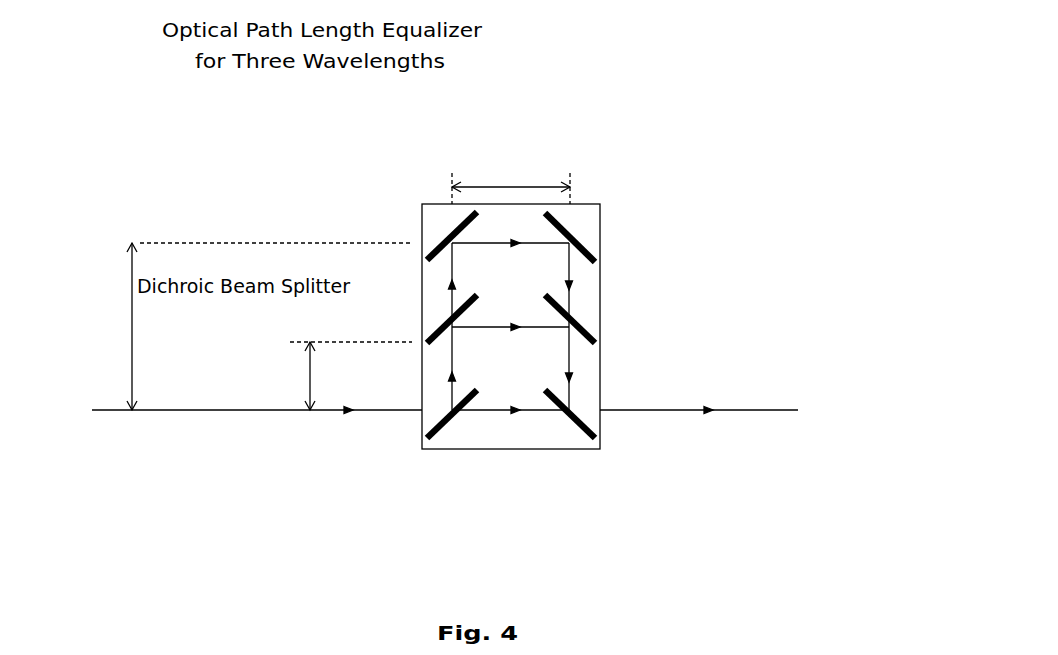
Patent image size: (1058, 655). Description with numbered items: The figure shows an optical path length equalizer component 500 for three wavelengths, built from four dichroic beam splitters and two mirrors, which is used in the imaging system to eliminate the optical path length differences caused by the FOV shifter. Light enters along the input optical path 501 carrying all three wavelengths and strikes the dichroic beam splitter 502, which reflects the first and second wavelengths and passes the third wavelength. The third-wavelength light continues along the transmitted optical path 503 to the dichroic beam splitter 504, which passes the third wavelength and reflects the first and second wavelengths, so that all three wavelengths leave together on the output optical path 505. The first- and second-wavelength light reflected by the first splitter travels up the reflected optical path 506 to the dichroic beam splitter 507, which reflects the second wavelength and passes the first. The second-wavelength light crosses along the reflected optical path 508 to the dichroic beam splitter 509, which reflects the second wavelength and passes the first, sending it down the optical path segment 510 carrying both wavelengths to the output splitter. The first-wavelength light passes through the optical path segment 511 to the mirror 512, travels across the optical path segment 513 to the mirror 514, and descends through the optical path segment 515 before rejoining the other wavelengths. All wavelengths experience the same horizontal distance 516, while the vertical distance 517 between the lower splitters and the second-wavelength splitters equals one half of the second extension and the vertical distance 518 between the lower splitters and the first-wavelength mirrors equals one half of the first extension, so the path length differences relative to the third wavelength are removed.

The optical path length equalizer component 500 is at (388, 150).
The input optical path 501 is at (257, 428).
The dichroic beam splitter 502 is at (445, 447).
The transmitted optical path 503 is at (512, 422).
The dichroic beam splitter 504 is at (577, 447).
The output optical path 505 is at (699, 428).
The reflected optical path 506 is at (440, 385).
The dichroic beam splitter 507 is at (427, 335).
The reflected optical path 508 is at (510, 356).
The dichroic beam splitter 509 is at (670, 310).
The optical path segment 510 is at (580, 370).
The optical path segment 511 is at (443, 288).
The mirror 512 is at (442, 232).
The optical path segment 513 is at (510, 271).
The mirror 514 is at (580, 232).
The optical path segment 515 is at (580, 287).
The horizontal distance 516 is at (518, 183).
The vertical distance 517 is at (302, 380).
The vertical distance 518 is at (127, 328).